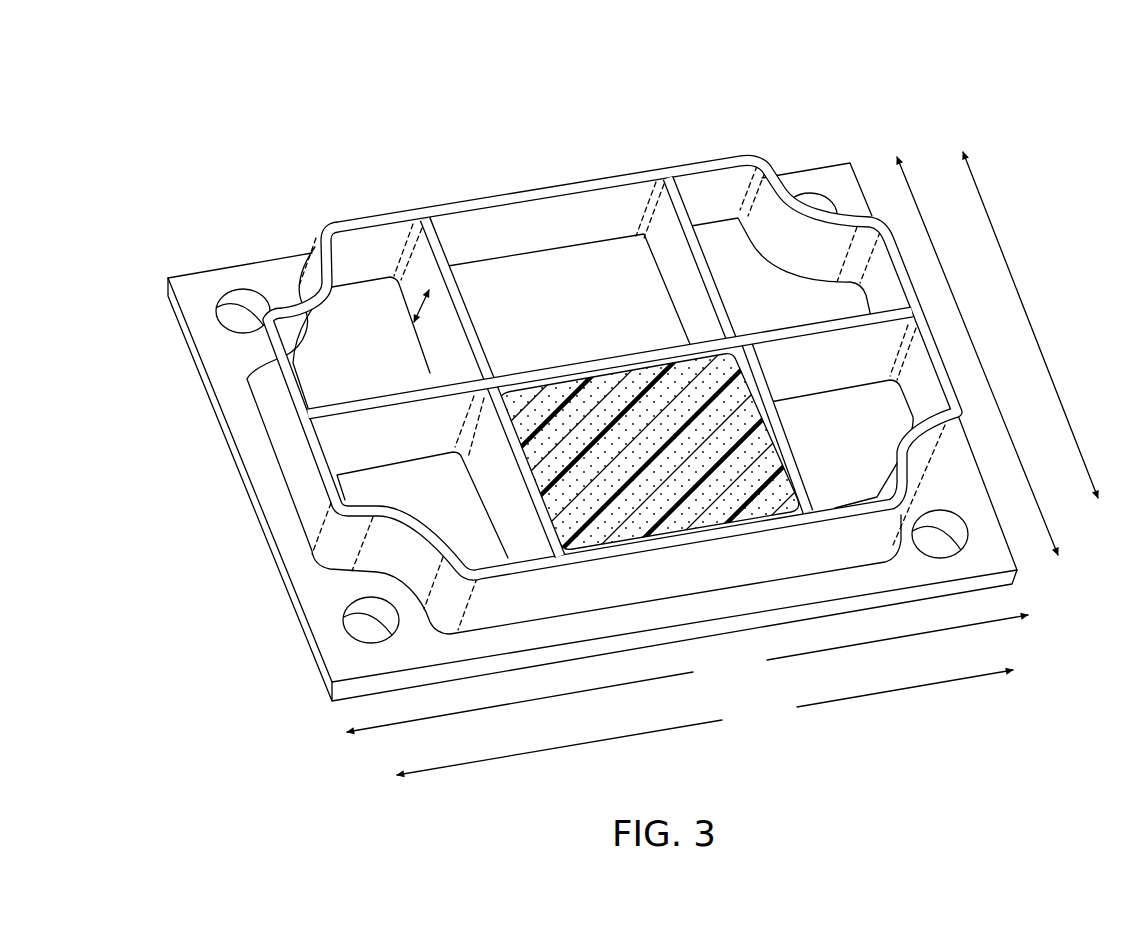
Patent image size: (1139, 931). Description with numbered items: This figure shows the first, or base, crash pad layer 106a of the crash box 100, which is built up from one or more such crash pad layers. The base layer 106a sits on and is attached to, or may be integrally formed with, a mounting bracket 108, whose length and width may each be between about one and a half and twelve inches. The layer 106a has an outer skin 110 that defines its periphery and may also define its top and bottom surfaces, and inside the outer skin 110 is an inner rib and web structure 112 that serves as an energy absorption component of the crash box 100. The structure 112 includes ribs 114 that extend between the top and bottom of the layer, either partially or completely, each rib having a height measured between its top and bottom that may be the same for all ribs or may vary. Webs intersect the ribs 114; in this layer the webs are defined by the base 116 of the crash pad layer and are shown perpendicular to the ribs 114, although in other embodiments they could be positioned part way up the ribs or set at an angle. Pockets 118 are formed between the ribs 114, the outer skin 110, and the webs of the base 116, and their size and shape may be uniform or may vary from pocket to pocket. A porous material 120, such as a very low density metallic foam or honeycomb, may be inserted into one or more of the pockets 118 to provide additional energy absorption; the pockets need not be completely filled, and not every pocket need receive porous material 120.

The crash box 100 is at (619, 398).
The first (base) crash pad layer 106a is at (285, 436).
The mounting bracket 108 is at (620, 432).
The outer skin 110 is at (547, 388).
The inner rib and web structure 112 is at (671, 180).
The rib 114 is at (450, 318).
The base (web) 116 is at (398, 489).
The pocket 118 is at (540, 282).
The porous material 120 is at (582, 502).